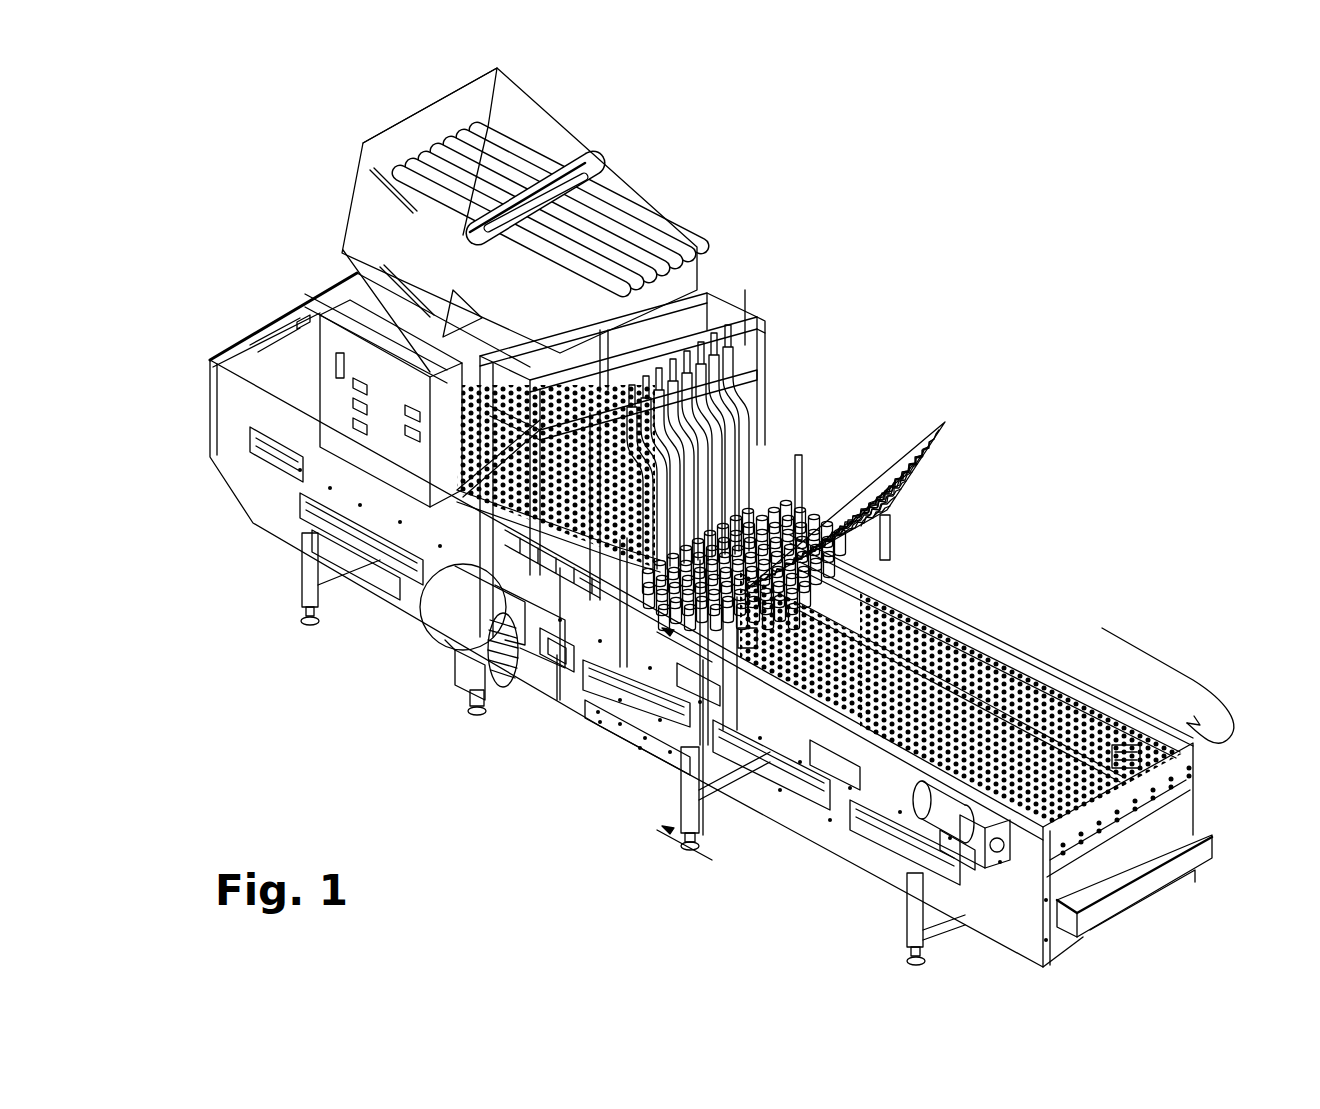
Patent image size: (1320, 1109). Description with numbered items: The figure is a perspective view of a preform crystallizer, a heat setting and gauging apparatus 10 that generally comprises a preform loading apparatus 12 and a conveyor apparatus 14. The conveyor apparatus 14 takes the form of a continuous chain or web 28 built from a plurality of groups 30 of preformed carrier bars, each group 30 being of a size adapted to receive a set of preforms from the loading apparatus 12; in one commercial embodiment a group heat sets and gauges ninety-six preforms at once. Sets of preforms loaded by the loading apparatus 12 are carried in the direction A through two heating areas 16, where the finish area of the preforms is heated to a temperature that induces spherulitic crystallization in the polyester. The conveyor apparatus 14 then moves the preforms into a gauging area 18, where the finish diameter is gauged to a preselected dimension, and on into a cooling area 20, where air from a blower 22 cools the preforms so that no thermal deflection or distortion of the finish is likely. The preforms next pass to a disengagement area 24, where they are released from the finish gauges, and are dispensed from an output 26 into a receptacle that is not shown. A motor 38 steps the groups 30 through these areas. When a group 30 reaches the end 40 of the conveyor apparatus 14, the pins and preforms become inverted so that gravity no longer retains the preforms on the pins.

The heat setting and gauging apparatus 10 is at (1010, 489).
The preform loading apparatus 12 is at (760, 320).
The conveyor apparatus 14 is at (1017, 630).
The heating areas 16 is at (790, 795).
The gauging area 18 is at (643, 683).
The cooling area 20 is at (555, 655).
The blower 22 is at (455, 620).
The disengagement area 24 is at (385, 545).
The output 26 is at (233, 500).
The continuous chain or web 28 is at (1127, 753).
The groups of carrier bars 30 is at (927, 620).
The motor 38 is at (935, 855).
The end of the conveyor apparatus 40 is at (1107, 807).